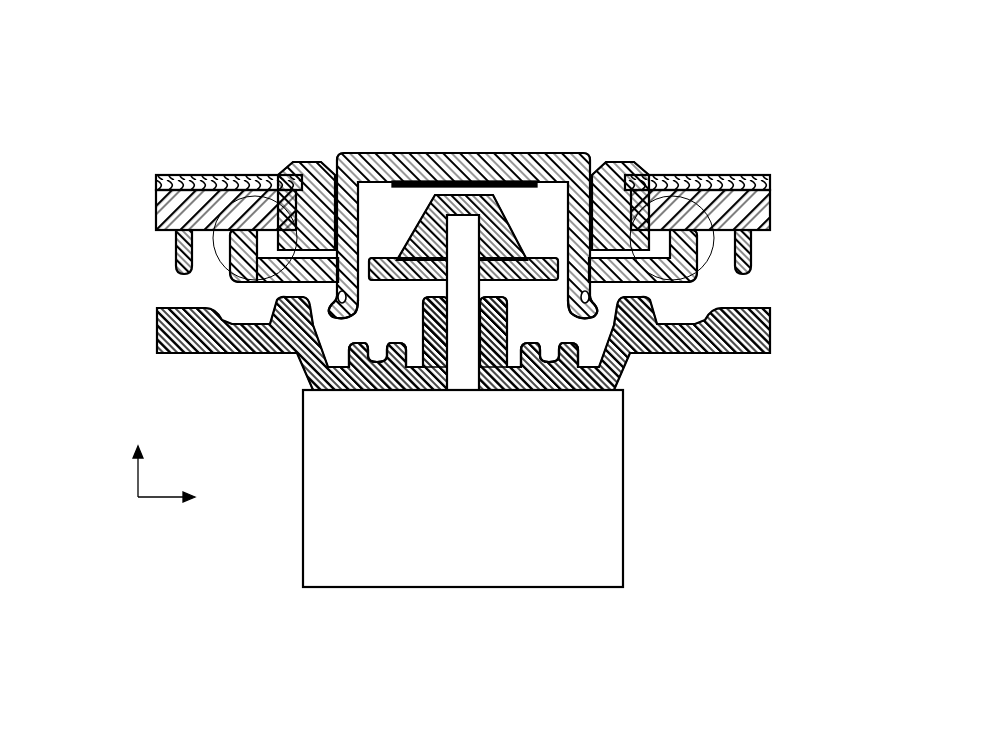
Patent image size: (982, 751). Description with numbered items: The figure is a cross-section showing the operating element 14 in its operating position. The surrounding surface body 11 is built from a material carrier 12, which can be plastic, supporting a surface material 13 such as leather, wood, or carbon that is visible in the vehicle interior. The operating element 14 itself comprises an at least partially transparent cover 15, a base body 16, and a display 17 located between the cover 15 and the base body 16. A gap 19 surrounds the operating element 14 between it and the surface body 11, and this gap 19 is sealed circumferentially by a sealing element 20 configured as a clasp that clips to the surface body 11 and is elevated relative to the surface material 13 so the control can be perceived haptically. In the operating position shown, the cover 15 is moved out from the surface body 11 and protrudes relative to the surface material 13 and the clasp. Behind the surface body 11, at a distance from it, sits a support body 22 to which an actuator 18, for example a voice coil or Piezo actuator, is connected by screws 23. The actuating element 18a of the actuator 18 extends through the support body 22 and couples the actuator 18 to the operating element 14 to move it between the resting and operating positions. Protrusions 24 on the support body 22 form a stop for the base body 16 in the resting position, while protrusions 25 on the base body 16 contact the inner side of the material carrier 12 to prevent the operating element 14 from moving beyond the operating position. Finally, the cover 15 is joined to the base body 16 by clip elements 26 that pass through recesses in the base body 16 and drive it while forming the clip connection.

The surface body 11 is at (463, 389).
The material carrier 12 is at (462, 198).
The surface material 13 is at (504, 132).
The operating element 14 is at (469, 255).
The cover 15 is at (463, 196).
The base body 16 is at (463, 177).
The display 17 is at (464, 131).
The actuator 18 is at (503, 488).
The actuating element 18a is at (437, 231).
The gap 19 is at (253, 334).
The sealing element 20 is at (463, 178).
The support body 22 is at (505, 343).
The screws 23 is at (477, 455).
The protrusions 24 is at (463, 424).
The protrusions 25 is at (412, 248).
The clip elements 26 is at (469, 370).